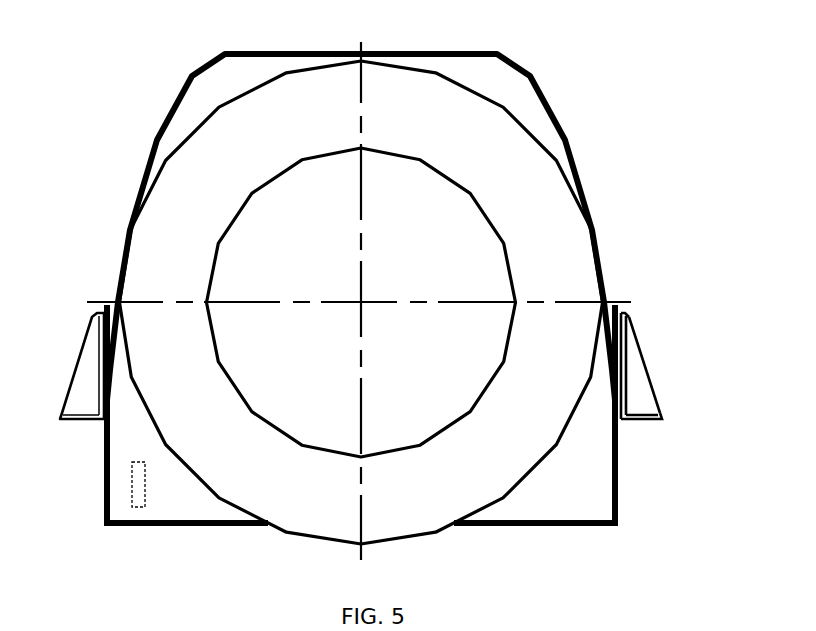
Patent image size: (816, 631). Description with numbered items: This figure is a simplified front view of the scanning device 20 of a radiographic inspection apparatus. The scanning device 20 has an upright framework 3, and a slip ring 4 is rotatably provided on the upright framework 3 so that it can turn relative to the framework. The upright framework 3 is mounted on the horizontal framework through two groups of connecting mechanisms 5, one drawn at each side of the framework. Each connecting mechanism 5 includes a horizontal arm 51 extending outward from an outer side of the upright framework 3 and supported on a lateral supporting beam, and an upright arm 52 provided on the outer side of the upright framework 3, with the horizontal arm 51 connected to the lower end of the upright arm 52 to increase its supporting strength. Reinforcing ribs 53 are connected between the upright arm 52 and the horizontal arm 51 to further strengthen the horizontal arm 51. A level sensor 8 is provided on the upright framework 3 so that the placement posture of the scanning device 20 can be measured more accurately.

The scanning device 20 is at (342, 28).
The upright framework 3 is at (513, 78).
The slip ring 4 is at (540, 197).
The connecting mechanism 5 is at (80, 382).
The horizontal arm 51 is at (647, 420).
The upright arm 52 is at (624, 322).
The reinforcing rib 53 is at (648, 383).
The level sensor 8 is at (137, 492).